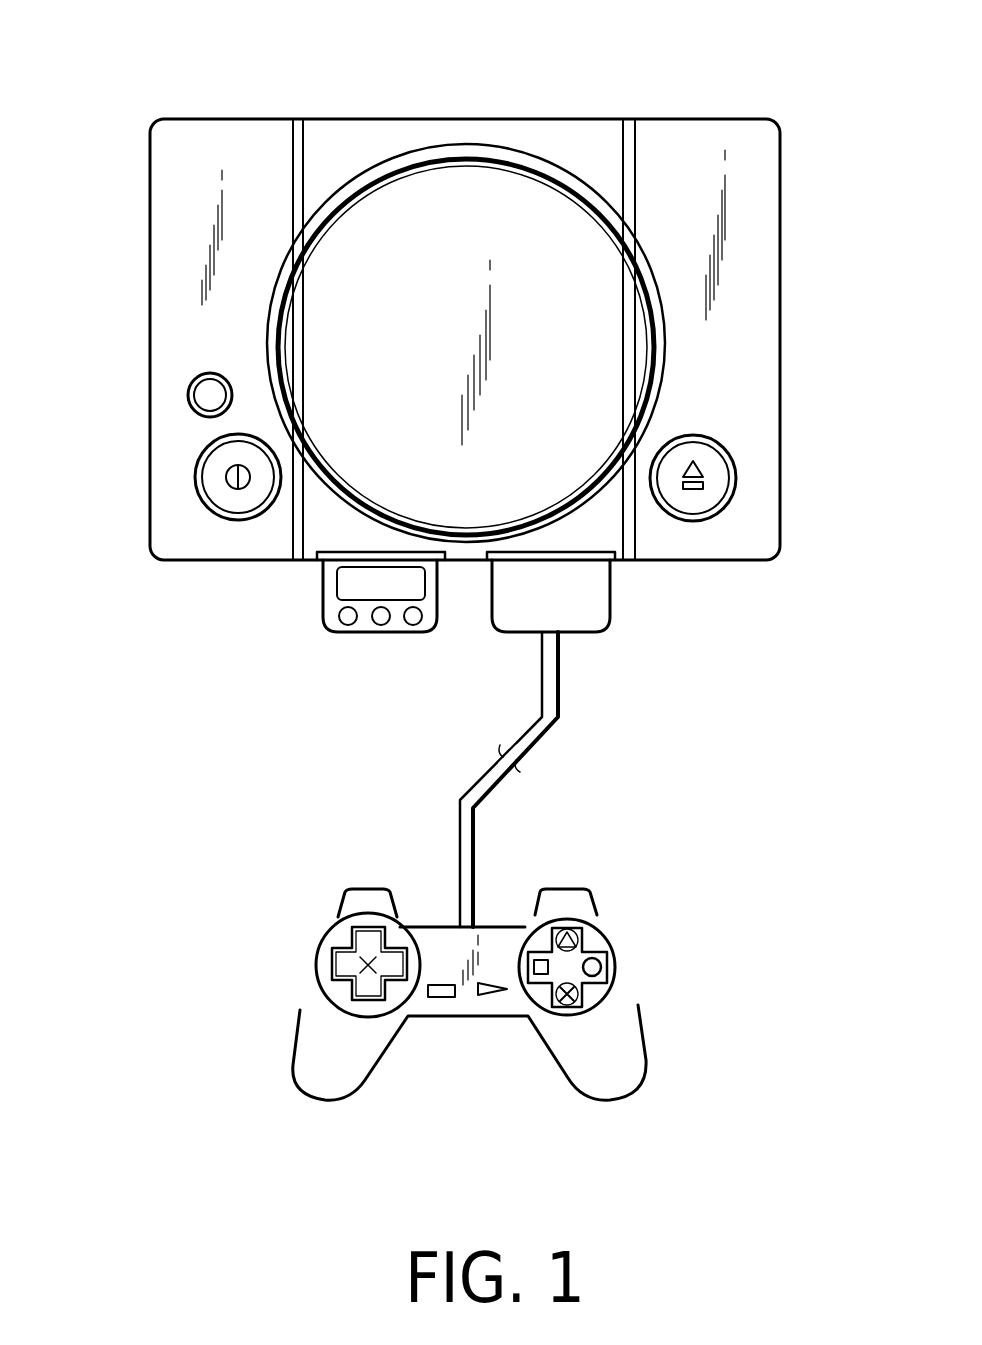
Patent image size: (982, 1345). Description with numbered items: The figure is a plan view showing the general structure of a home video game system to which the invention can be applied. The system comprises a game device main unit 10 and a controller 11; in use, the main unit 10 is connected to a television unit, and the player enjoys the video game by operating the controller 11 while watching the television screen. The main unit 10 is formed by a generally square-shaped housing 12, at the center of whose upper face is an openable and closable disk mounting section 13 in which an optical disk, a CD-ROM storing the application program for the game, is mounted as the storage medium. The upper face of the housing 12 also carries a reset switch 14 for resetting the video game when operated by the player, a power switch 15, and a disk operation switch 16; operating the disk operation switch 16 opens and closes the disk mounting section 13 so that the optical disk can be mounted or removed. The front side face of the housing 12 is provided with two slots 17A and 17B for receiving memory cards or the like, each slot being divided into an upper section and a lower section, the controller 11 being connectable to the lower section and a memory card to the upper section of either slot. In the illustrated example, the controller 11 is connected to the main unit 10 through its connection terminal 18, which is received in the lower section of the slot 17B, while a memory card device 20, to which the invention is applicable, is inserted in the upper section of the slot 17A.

The game device main unit 10 is at (495, 341).
The controller 11 is at (660, 953).
The housing 12 is at (750, 562).
The disk mounting section 13 is at (508, 180).
The reset switch 14 is at (197, 393).
The power switch 15 is at (197, 477).
The disk operation switch 16 is at (720, 477).
The slot 17A is at (305, 565).
The slot 17B is at (620, 563).
The connection terminal 18 is at (577, 620).
The memory card device 20 is at (382, 632).